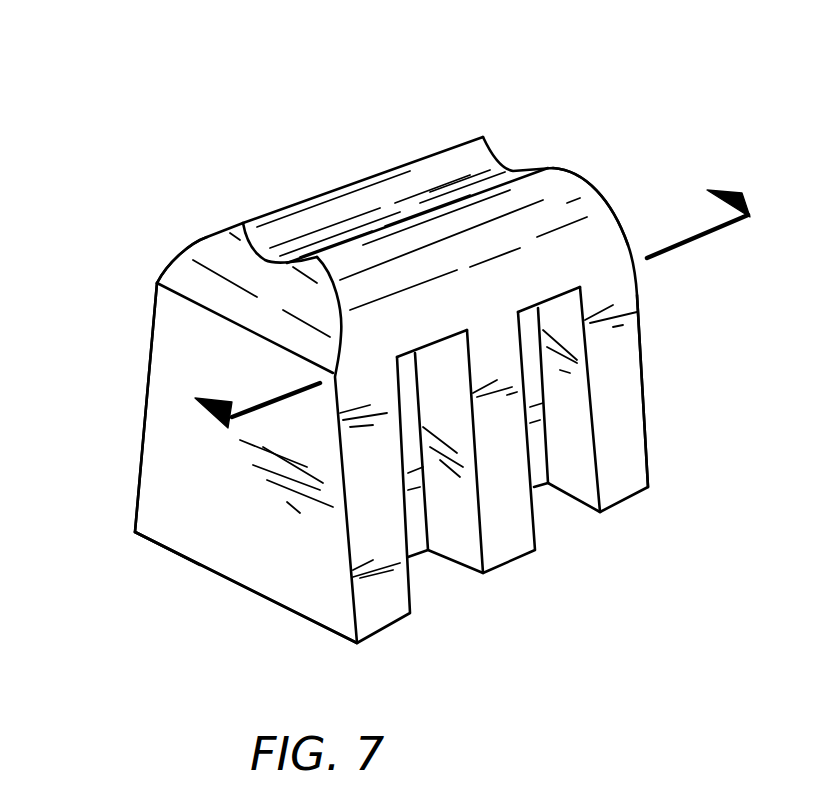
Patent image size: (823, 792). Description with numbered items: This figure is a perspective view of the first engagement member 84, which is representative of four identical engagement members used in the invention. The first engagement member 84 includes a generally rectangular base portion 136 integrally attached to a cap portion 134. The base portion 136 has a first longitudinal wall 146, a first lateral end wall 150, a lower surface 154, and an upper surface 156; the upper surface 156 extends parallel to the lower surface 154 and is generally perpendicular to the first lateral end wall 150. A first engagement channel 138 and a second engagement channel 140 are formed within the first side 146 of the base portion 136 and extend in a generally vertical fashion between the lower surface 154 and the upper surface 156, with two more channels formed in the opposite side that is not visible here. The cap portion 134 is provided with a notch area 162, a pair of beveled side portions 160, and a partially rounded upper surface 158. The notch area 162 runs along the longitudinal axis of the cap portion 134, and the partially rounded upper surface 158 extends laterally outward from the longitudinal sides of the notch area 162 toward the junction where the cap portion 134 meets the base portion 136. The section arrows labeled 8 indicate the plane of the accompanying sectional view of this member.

The first engagement member 84 is at (265, 125).
The cap portion 134 is at (542, 180).
The base portion 136 is at (180, 540).
The first engagement channel 138 is at (420, 567).
The second engagement channel 140 is at (545, 502).
The first longitudinal wall 146 is at (627, 380).
The first lateral end wall 150 is at (152, 471).
The lower surface 154 is at (232, 600).
The upper surface 156 is at (185, 315).
The partially rounded upper surface 158 is at (458, 255).
The beveled side portions 160 is at (212, 238).
The notch area 162 is at (372, 193).
The section line 8- 8 is at (456, 293).